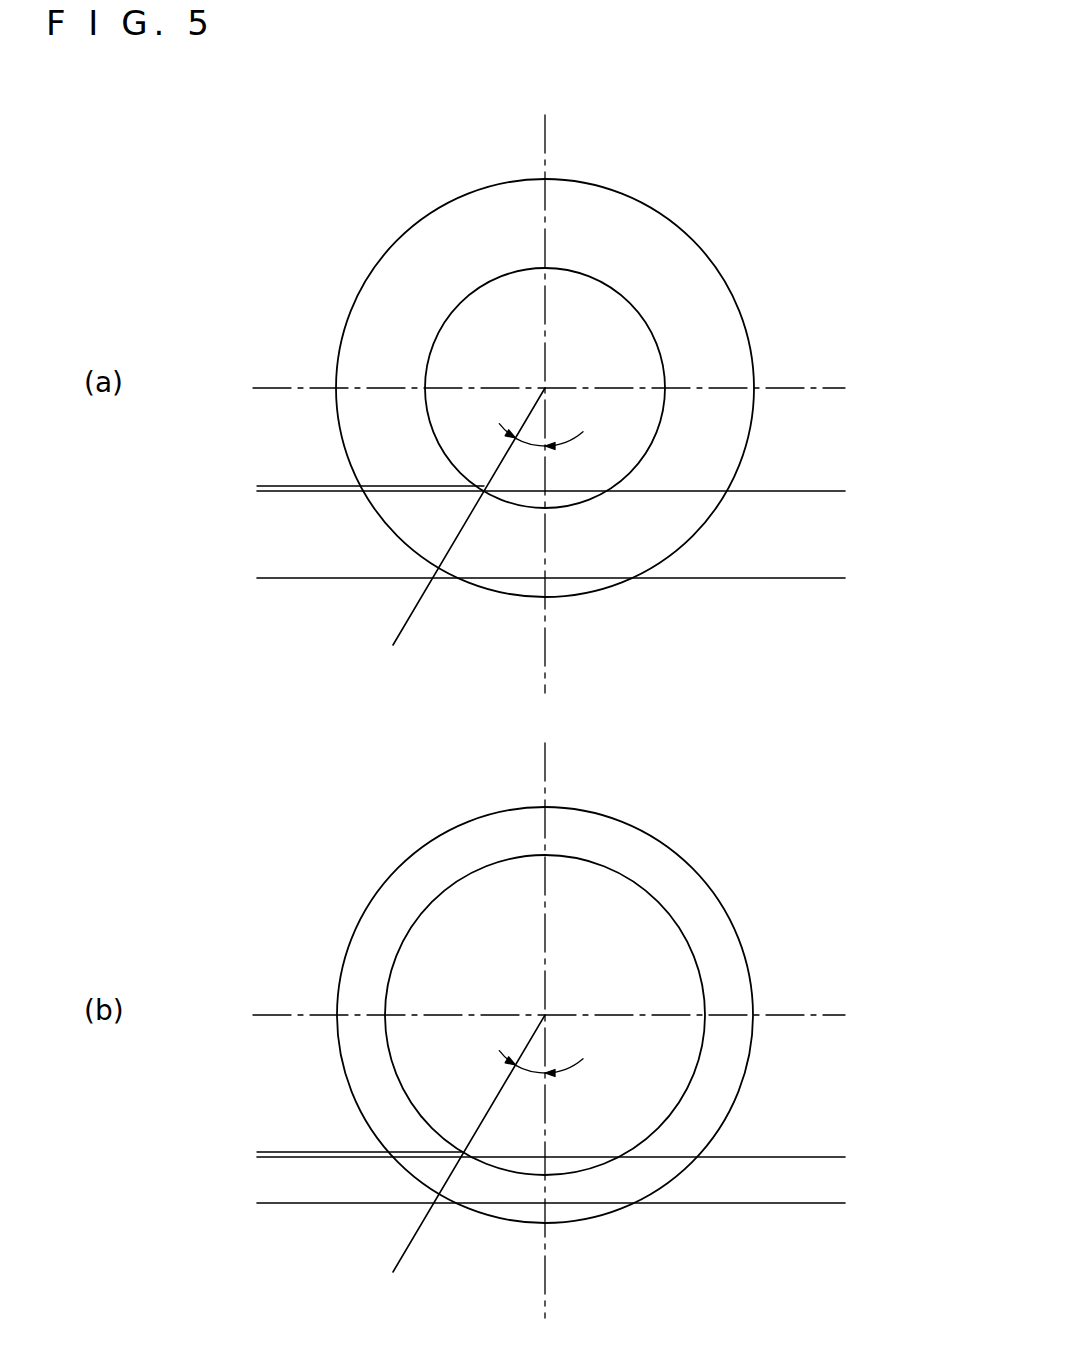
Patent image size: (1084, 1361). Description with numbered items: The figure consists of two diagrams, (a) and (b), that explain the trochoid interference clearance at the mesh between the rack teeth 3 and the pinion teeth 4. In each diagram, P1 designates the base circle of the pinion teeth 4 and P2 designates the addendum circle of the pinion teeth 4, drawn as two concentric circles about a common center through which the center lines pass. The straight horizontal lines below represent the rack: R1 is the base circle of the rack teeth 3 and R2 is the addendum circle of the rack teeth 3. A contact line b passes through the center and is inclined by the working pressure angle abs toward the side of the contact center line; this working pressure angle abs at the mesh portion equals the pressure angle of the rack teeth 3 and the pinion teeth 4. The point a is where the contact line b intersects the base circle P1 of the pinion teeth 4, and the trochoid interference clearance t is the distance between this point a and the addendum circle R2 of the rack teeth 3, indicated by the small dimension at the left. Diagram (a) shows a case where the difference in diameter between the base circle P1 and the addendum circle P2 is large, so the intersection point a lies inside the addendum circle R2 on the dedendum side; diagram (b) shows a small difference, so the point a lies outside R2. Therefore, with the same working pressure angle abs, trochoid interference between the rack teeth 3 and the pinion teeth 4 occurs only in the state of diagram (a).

The rack teeth 3 is at (501, 845).
The pinion teeth 4 is at (538, 701).
The base circle of the pinion teeth P1 is at (617, 293).
The addendum circle of the pinion teeth P2 is at (734, 297).
The base circle of the rack teeth R1 is at (703, 579).
The addendum circle of the rack teeth R2 is at (760, 491).
The trochoid interference clearance t is at (278, 450).
The intersection point a is at (486, 496).
The contact line b is at (416, 607).
The working pressure angle abs is at (550, 735).